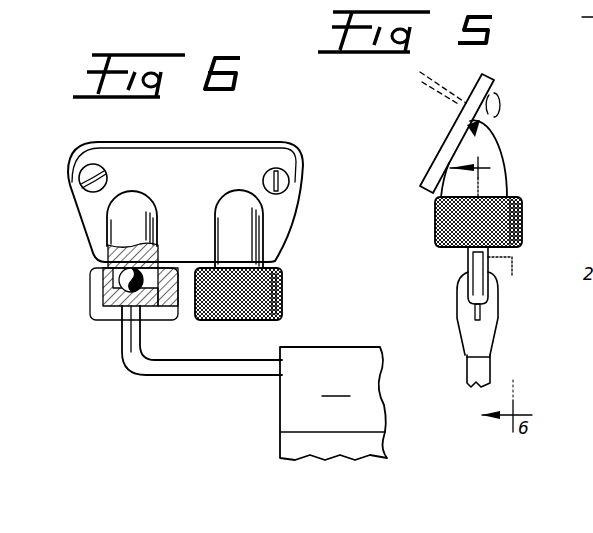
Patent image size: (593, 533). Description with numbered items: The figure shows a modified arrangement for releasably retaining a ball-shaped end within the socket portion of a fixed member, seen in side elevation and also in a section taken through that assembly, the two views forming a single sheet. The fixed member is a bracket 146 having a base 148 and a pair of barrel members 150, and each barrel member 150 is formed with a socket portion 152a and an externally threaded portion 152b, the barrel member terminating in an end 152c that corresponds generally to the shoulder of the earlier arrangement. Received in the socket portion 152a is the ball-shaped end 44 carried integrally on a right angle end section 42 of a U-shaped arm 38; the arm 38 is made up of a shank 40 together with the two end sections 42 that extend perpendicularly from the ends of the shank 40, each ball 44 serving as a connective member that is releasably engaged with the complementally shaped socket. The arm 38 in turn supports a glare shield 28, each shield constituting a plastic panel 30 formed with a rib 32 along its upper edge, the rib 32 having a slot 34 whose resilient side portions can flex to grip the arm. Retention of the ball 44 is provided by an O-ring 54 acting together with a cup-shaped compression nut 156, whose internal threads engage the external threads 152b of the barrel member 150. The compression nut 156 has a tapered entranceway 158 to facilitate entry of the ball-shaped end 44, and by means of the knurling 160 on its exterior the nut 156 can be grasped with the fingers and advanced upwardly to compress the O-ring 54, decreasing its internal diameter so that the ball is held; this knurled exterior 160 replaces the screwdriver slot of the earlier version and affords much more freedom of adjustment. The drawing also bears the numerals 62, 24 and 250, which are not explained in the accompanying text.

In FIG. 5, the housing 24 is at (582, 144).
In FIG. 6, the glare shield 28 is at (276, 450).
In FIG. 5, the glare shield 28 is at (462, 343).
In FIG. 6, the panel 30 is at (365, 447).
In FIG. 5, the panel 30 is at (467, 378).
In FIG. 6, the rib 32 is at (333, 403).
In FIG. 5, the rib 32 is at (499, 326).
In FIG. 5, the slot 34 is at (474, 313).
In FIG. 6, the U-shaped arm 38 is at (165, 380).
In FIG. 5, the U-shaped arm 38 is at (493, 291).
In FIG. 6, the shank 40 is at (228, 376).
In FIG. 6, the end section 42 is at (141, 338).
In FIG. 5, the end section 42 is at (467, 268).
In FIG. 6, the ball-shaped end 44 is at (105, 256).
In FIG. 6, the O-ring 54 is at (170, 306).
In FIG. 6, the screw 62 is at (82, 176).
In FIG. 5, the screw 62 is at (495, 101).
In FIG. 6, the bracket 146 is at (245, 137).
In FIG. 5, the bracket 146 is at (428, 165).
In FIG. 6, the base 148 is at (145, 166).
In FIG. 5, the base 148 is at (484, 74).
In FIG. 6, the barrel member 150 is at (233, 197).
In FIG. 5, the barrel member 150 is at (498, 135).
In FIG. 6, the socket portion 152a is at (156, 247).
In FIG. 6, the externally threaded portion 152b is at (92, 277).
In FIG. 6, the end 152c is at (165, 274).
In FIG. 6, the compression nut 156 is at (84, 322).
In FIG. 5, the compression nut 156 is at (430, 223).
In FIG. 6, the tapered entranceway 158 is at (119, 327).
In FIG. 6, the knurling 160 is at (282, 311).
In FIG. 5, the knurling 160 is at (520, 218).
In FIG. 5, the assembly 250 is at (562, 20).